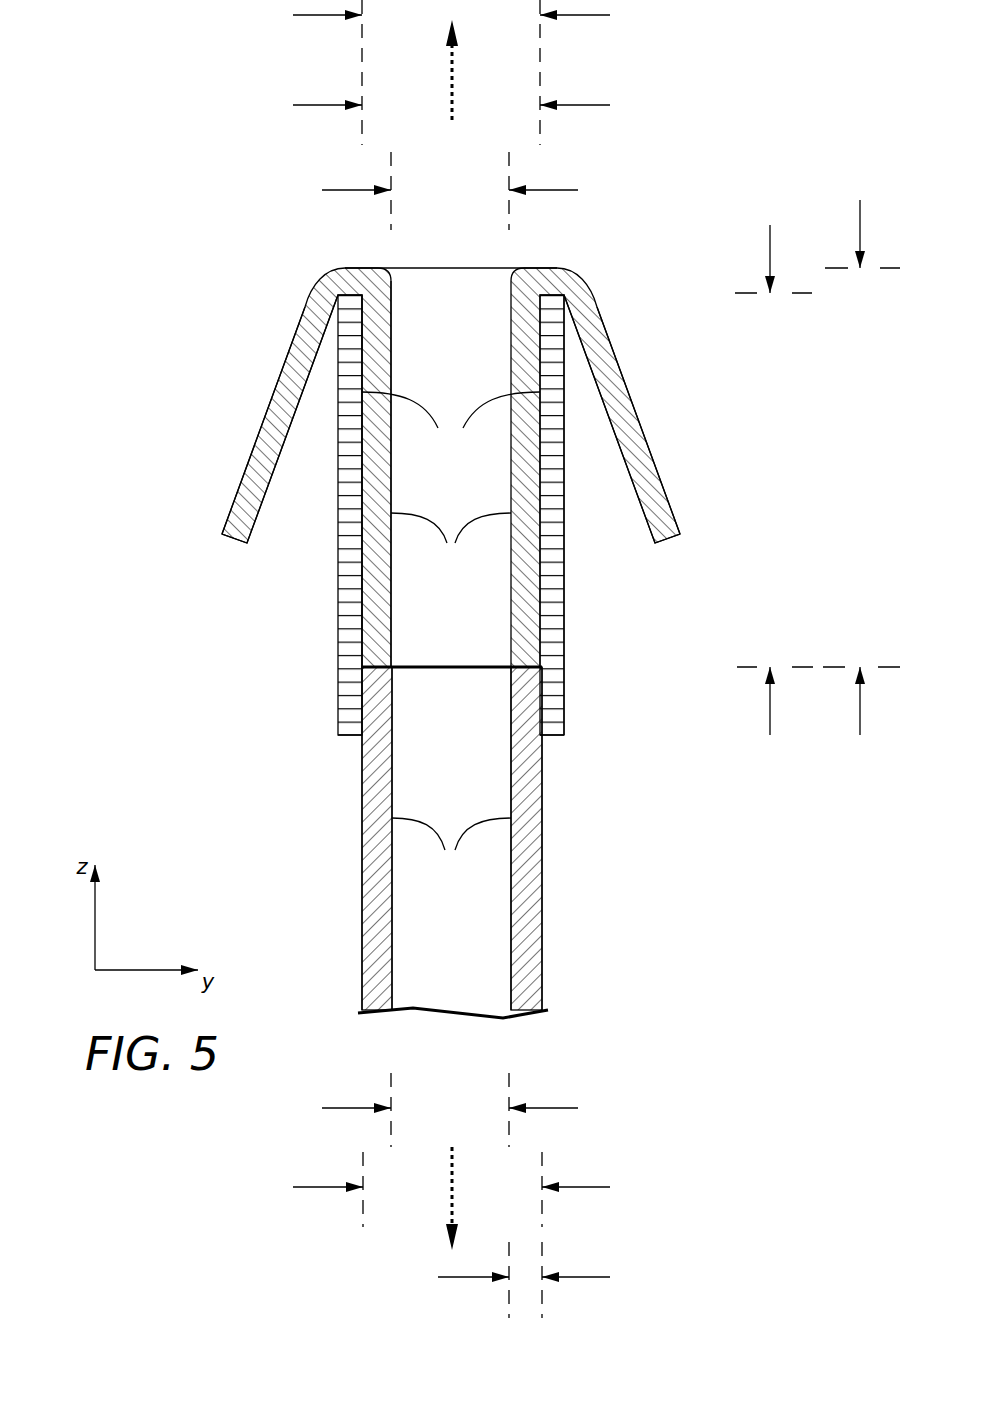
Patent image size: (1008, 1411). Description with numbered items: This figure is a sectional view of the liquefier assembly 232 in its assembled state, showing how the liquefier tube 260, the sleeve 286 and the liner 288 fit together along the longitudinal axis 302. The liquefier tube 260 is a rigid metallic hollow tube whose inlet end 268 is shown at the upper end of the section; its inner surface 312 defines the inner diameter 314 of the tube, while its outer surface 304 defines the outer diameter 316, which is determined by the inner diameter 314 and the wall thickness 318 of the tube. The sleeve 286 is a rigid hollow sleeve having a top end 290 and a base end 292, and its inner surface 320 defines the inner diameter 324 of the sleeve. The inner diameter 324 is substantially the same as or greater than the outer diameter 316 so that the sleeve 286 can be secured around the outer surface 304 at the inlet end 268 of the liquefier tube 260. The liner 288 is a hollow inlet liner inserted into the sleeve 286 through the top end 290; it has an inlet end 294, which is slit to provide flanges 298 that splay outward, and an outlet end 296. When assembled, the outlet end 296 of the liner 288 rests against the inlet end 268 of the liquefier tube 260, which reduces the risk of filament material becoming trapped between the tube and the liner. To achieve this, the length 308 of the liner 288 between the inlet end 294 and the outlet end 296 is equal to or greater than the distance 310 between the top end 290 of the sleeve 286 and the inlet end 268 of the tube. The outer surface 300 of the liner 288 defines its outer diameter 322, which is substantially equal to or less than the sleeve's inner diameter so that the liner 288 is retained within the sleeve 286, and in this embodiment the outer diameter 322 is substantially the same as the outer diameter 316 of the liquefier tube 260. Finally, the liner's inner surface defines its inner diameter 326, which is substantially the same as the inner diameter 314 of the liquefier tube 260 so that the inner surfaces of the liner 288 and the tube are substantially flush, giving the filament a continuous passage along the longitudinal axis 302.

The liquefier assembly 232 is at (148, 718).
The liquefier tube 260 is at (552, 795).
The inlet end 268 is at (412, 662).
The sleeve 286 is at (567, 643).
The liner 288 is at (643, 358).
The top end 290 is at (333, 316).
The base end 292 is at (355, 747).
The inlet end 294 is at (385, 262).
The outlet end 296 is at (482, 673).
The flanges 298 is at (245, 477).
The outer surface 300 is at (340, 552).
The longitudinal axis 302 is at (452, 95).
The outer surface 304 is at (362, 852).
The length 308 is at (770, 248).
The distance 310 is at (860, 227).
The inner surface 312 is at (451, 847).
The inner diameter 314 is at (553, 1108).
The outer diameter 316 is at (582, 1187).
The wall thickness 318 is at (582, 1277).
The inner surface 320 is at (451, 422).
The outer diameter 322 is at (580, 105).
The inner diameter 324 is at (583, 17).
The inner diameter 326 is at (555, 190).